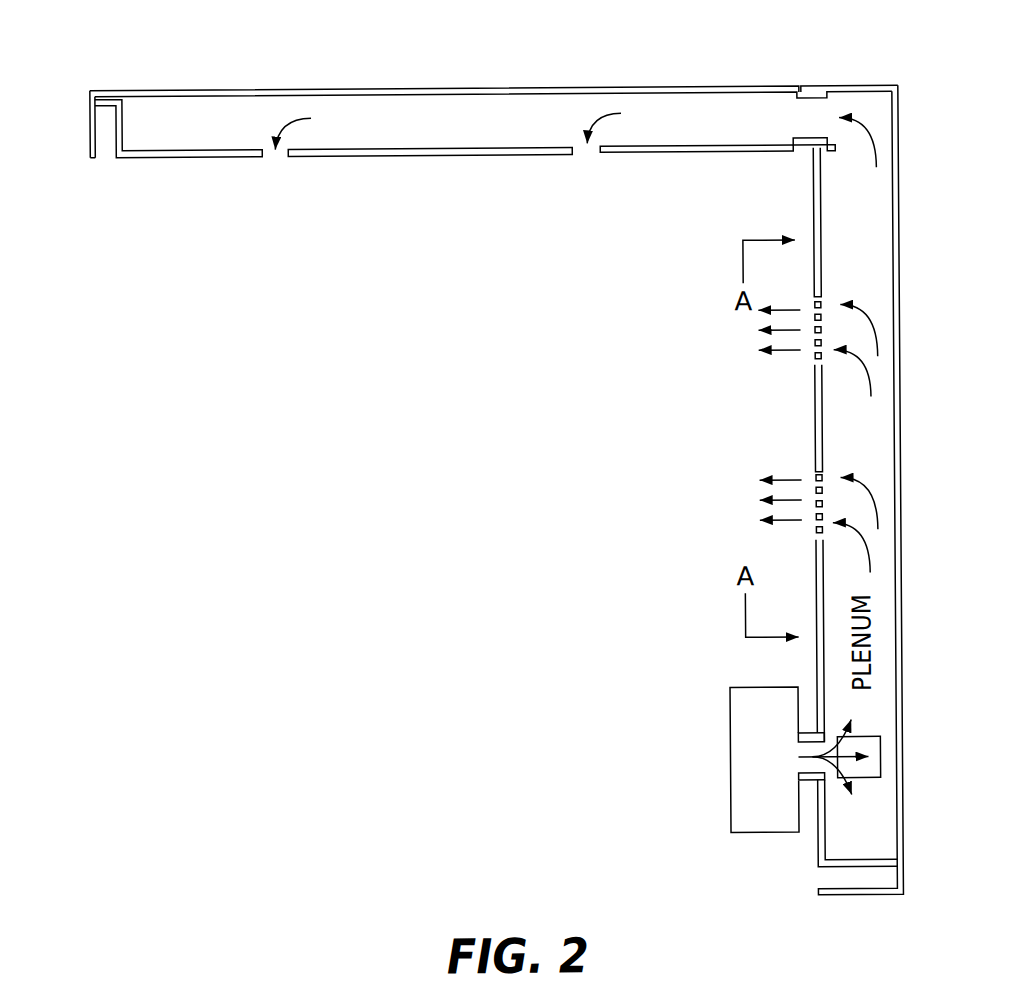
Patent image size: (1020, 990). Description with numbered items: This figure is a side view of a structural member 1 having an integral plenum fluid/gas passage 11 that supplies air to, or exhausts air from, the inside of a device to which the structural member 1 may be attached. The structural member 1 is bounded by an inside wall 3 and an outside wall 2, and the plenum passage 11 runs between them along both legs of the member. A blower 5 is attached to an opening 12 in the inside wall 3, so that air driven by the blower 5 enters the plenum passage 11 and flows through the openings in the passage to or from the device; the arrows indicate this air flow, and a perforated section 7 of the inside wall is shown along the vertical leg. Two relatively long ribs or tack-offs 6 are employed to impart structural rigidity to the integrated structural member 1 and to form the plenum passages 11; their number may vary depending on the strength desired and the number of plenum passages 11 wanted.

The structural member 1 is at (90, 118).
The outside wall 2 is at (486, 88).
The inside wall 3 is at (505, 156).
The blower 5 is at (745, 825).
The tack-offs 6 is at (107, 137).
The perforated partition 7 is at (814, 482).
The plenum fluid/gas passage 11 is at (713, 118).
The opening 12 is at (806, 734).